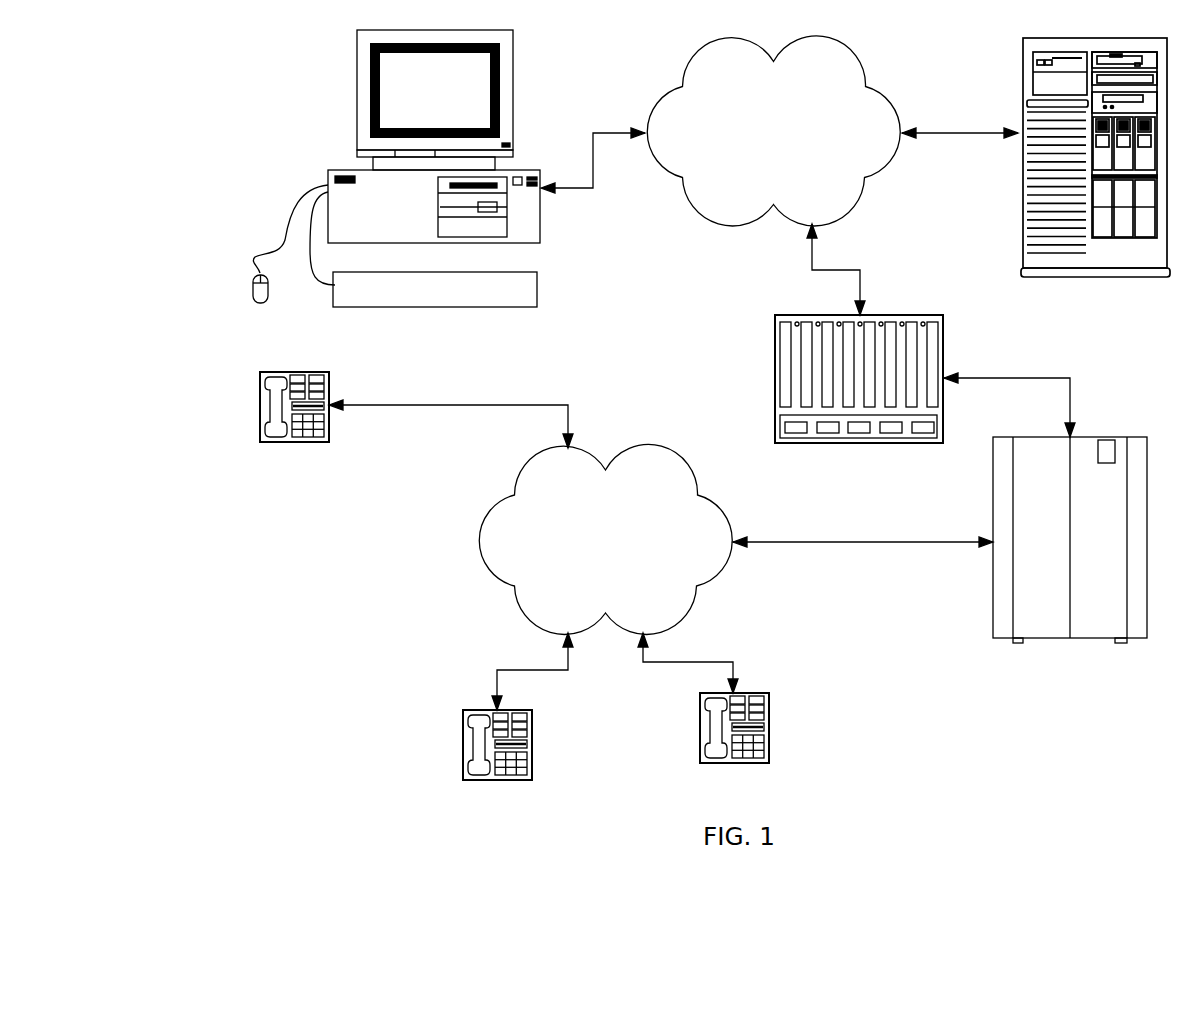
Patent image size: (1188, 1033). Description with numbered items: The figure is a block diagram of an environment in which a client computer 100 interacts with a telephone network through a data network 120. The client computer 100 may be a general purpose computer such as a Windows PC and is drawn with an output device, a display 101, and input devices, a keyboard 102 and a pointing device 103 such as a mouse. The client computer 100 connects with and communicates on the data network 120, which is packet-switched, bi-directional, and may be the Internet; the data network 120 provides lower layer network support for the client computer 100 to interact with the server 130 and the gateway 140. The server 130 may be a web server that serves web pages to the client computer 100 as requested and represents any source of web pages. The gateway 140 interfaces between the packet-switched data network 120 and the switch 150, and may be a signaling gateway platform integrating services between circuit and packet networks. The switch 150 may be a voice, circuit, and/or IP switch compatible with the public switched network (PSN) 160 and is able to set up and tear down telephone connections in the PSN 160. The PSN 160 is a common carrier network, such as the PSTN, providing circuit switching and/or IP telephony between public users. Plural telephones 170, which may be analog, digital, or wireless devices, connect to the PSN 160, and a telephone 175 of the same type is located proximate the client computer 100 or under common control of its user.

The client computer 100 is at (357, 186).
The display 101 is at (357, 63).
The keyboard 102 is at (333, 304).
The pointing device 103 is at (253, 287).
The data network 120 is at (773, 131).
The server 130 is at (1095, 175).
The gateway 140 is at (859, 393).
The switch 150 is at (1070, 554).
The public switched network (PSN) 160 is at (605, 539).
The telephones 170 is at (616, 750).
The telephone 175 is at (295, 421).